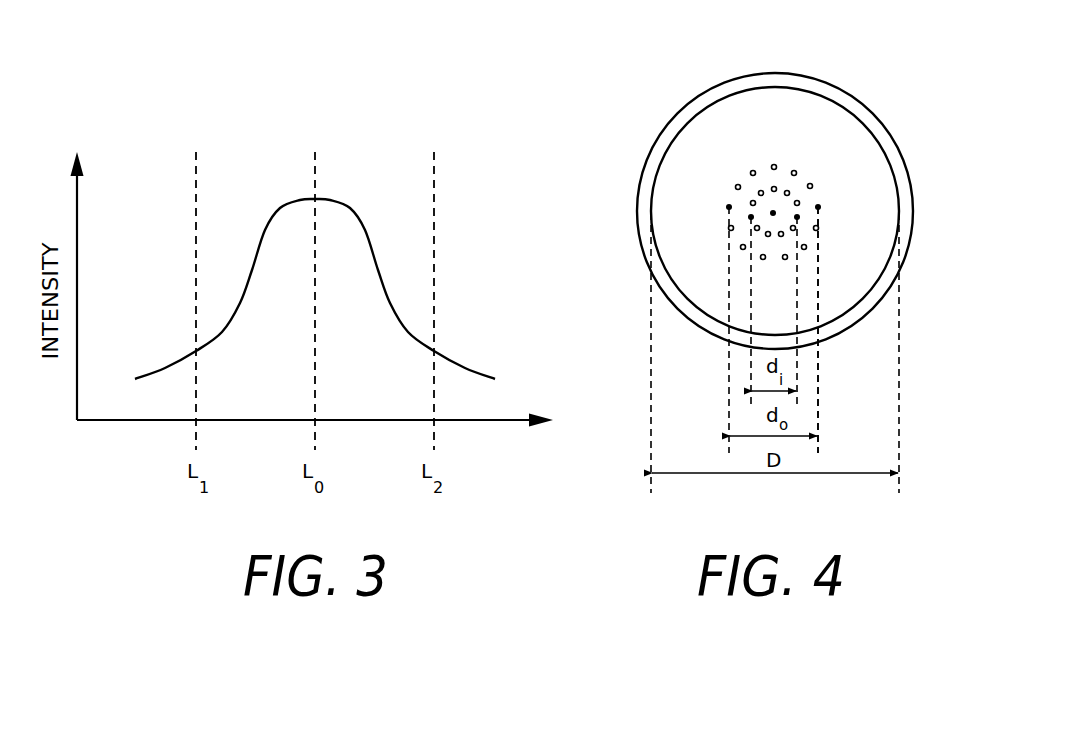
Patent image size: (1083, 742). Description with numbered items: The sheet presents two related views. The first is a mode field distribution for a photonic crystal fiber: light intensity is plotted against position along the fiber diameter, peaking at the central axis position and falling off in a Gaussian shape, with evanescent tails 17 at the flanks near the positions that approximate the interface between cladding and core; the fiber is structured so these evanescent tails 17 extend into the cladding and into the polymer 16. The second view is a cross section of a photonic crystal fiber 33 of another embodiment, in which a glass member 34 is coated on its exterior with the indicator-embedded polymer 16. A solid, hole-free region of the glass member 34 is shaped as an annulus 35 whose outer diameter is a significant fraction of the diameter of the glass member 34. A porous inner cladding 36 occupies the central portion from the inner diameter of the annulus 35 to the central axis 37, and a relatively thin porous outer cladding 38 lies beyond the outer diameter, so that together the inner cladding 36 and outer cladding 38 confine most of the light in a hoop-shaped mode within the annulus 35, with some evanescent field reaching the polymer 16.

In FIG. 3, the evanescent tails 17 is at (160, 352).
In FIG. 4, the photonic crystal fiber 33 is at (617, 65).
In FIG. 4, the porous outer cladding 38 is at (662, 176).
In FIG. 4, the polymer 16 is at (736, 340).
In FIG. 4, the central axis 37 is at (778, 210).
In FIG. 4, the porous inner cladding 36 is at (785, 191).
In FIG. 4, the annulus 35 is at (763, 176).
In FIG. 4, the glass member 34 is at (820, 260).